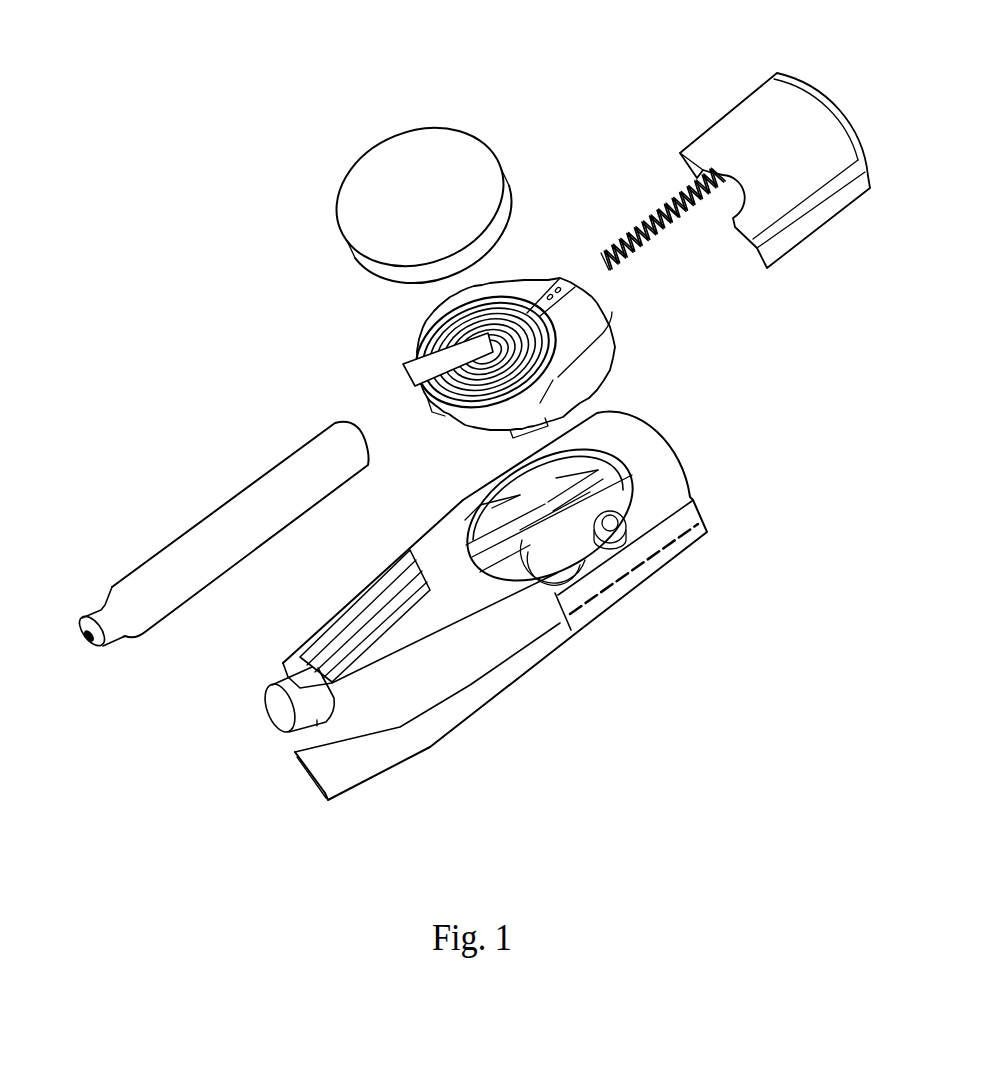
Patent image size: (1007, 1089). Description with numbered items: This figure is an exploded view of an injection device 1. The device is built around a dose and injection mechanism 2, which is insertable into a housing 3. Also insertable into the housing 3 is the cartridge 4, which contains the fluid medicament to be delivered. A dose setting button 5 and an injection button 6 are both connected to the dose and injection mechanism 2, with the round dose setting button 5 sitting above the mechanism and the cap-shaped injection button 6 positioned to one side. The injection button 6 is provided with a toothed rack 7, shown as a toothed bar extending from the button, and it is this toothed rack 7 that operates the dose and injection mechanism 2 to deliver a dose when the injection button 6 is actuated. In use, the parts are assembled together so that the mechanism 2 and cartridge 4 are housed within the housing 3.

The injection device 1 is at (203, 199).
The dose and injection mechanism 2 is at (578, 338).
The housing 3 is at (380, 705).
The cartridge 4 is at (178, 577).
The dose setting button 5 is at (388, 182).
The injection button 6 is at (805, 135).
The toothed rack 7 is at (643, 217).